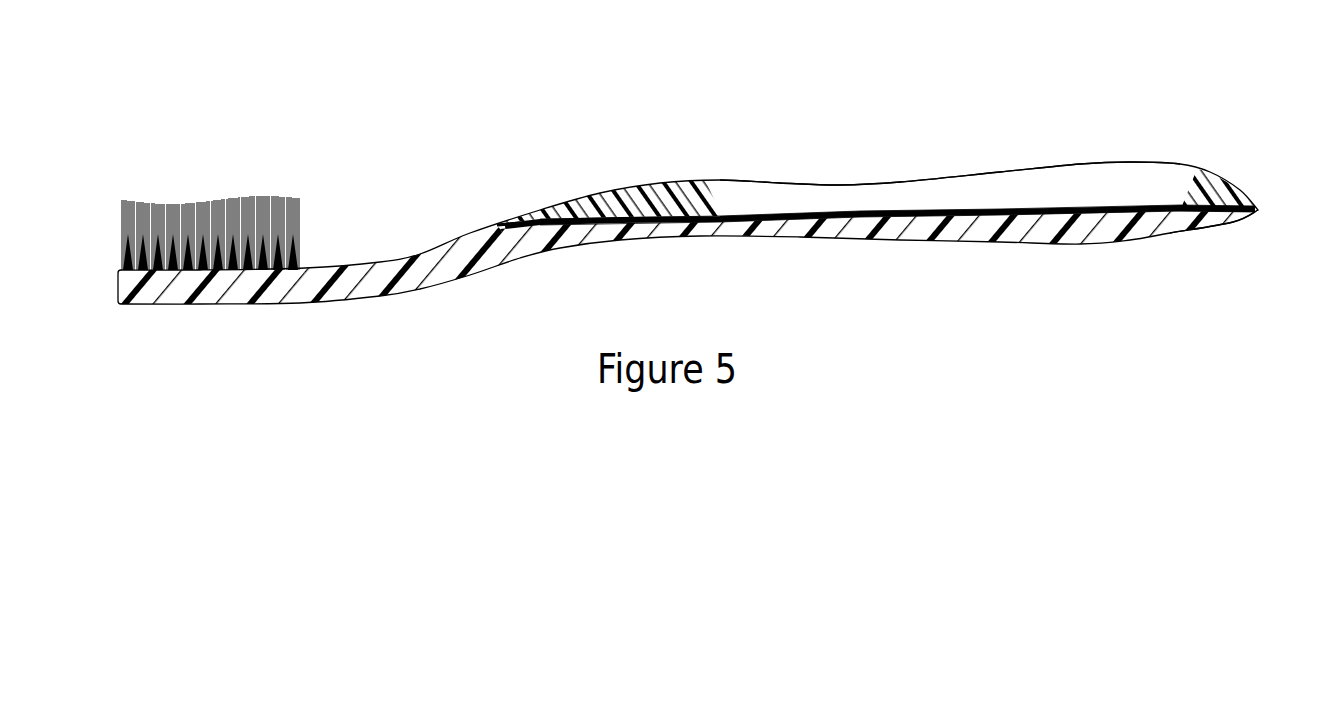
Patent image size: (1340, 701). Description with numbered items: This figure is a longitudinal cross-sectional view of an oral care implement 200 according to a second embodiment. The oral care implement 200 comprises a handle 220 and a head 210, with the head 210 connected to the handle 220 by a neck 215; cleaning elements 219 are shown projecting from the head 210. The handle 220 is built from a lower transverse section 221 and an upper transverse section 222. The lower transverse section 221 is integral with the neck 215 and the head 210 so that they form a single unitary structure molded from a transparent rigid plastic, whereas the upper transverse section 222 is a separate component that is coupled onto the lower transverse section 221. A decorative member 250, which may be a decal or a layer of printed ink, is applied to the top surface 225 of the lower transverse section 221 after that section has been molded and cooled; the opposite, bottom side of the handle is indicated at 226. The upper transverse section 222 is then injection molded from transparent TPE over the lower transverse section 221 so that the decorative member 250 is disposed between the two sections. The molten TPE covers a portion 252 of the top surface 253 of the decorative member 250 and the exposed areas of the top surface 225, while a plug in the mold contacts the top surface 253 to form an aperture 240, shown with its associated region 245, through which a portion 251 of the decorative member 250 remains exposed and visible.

The oral care implement 200 is at (372, 97).
The head 210 is at (118, 306).
The neck 215 is at (400, 293).
The cleaning elements 219 is at (207, 200).
The handle 220 is at (1108, 250).
The lower transverse section 221 is at (944, 238).
The upper transverse section 222 is at (640, 194).
The top surface 225 is at (1252, 205).
The lower distal end portion 226 is at (1252, 213).
The aperture 240 is at (905, 197).
The thermoplastic elastomer layer 245 is at (950, 173).
The decorative member 250 is at (1026, 210).
The exposed portion of the decorative member 251 is at (800, 212).
The covered portion of the decorative member 252 is at (655, 225).
The top surface of the decorative member 253 is at (1110, 208).